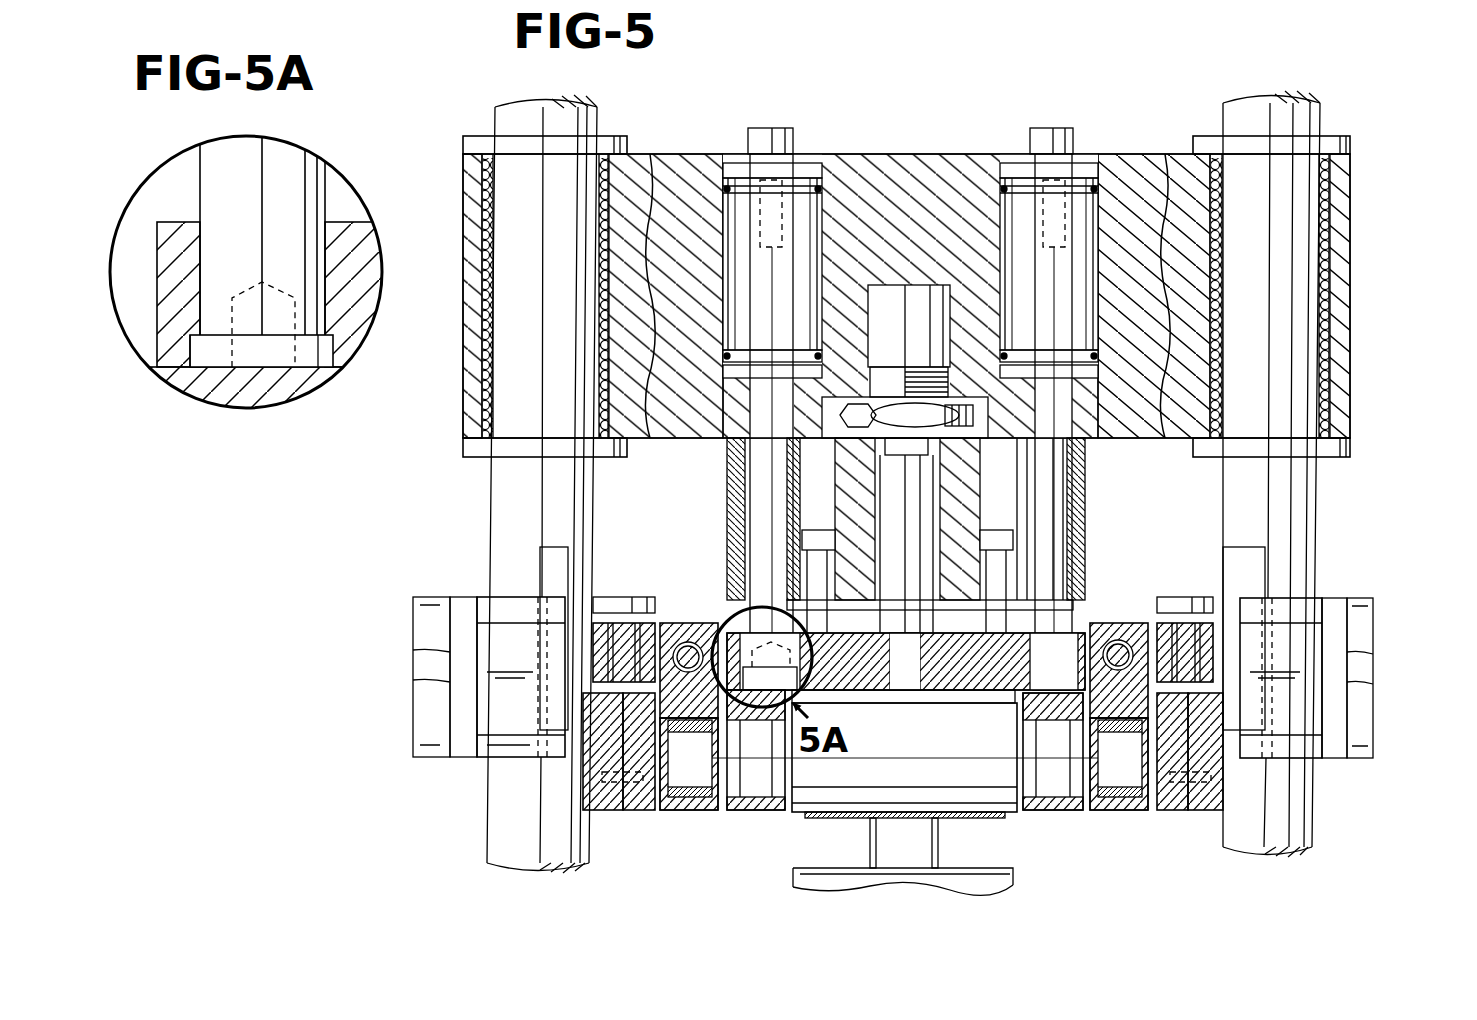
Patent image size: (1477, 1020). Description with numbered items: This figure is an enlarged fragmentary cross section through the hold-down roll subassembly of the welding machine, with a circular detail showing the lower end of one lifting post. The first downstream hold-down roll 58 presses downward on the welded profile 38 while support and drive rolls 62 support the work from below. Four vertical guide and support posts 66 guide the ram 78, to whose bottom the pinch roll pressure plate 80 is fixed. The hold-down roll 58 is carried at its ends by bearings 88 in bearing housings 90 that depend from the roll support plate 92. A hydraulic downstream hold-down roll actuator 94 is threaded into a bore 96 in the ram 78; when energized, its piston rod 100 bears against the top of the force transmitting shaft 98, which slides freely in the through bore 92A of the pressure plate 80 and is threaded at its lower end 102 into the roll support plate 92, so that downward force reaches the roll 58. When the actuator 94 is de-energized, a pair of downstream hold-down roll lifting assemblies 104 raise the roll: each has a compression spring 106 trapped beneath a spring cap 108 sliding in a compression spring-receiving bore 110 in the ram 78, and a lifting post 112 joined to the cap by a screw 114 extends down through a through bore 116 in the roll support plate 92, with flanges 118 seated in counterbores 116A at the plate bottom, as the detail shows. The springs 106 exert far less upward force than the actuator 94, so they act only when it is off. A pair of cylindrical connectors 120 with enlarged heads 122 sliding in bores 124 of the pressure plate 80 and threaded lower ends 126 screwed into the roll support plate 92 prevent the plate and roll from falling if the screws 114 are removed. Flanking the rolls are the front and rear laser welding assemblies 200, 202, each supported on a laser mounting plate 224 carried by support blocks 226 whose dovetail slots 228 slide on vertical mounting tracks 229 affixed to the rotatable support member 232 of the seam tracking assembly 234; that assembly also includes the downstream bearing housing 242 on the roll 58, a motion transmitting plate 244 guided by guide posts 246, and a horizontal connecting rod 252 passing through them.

In FIG. 5, the welded profile 38 is at (955, 834).
In FIG. 5, the first downstream hold-down roll 58 is at (842, 778).
In FIG. 5, the support and drive rolls 62 is at (805, 885).
In FIG. 5, the guide and support posts 66 is at (568, 123).
In FIG. 5, the ram 78 is at (873, 153).
In FIG. 5, the pinch roll pressure plate 80 is at (1085, 467).
In FIG. 5, the bearings 88 is at (747, 777).
In FIG. 5, the bearing housings 90 is at (1047, 807).
In FIG. 5A, the bearing housings 90 is at (265, 395).
In FIG. 5, the roll support plate 92 is at (930, 680).
In FIG. 5A, the roll support plate 92 is at (172, 228).
In FIG. 5, the through bore 92A is at (941, 512).
In FIG. 5, the hydraulic downstream hold-down roll actuator 94 is at (905, 295).
In FIG. 5, the bore 96 is at (866, 380).
In FIG. 5, the force transmitting shaft 98 is at (877, 510).
In FIG. 5, the piston rod 100 is at (877, 463).
In FIG. 5, the lower end 102 is at (888, 680).
In FIG. 5, the downstream hold-down roll lifting assemblies 104 is at (737, 145).
In FIG. 5, the compression spring 106 is at (818, 185).
In FIG. 5, the spring cap 108 is at (797, 157).
In FIG. 5, the compression spring-receiving bore 110 is at (722, 212).
In FIG. 5, the lifting post 112 is at (1030, 250).
In FIG. 5A, the lifting post 112 is at (300, 162).
In FIG. 5, the screw 114 is at (765, 133).
In FIG. 5A, the through bore 116 is at (200, 262).
In FIG. 5A, the counterbores 116A is at (218, 395).
In FIG. 5A, the flanges 118 is at (320, 350).
In FIG. 5, the cylindrical connectors 120 is at (993, 618).
In FIG. 5, the enlarged heads 122 is at (980, 540).
In FIG. 5, the bores 124 is at (1010, 520).
In FIG. 5, the threaded lower ends 126 is at (1010, 707).
In FIG. 5, the front laser welding assembly 200 is at (1384, 638).
In FIG. 5, the rear laser welding assembly 202 is at (406, 612).
In FIG. 5, the laser mounting plate 224 is at (450, 645).
In FIG. 5, the support blocks 226 is at (480, 692).
In FIG. 5, the dovetail slots 228 is at (545, 630).
In FIG. 5, the mounting tracks 229 is at (553, 560).
In FIG. 5, the rotatable support member 232 is at (623, 814).
In FIG. 5, the seam tracking assembly 234 is at (643, 814).
In FIG. 5, the second, downstream bearing housing 242 is at (670, 812).
In FIG. 5, the motion transmitting plate 244 is at (632, 637).
In FIG. 5, the guide posts 246 is at (617, 597).
In FIG. 5, the connecting rod 252 is at (688, 645).